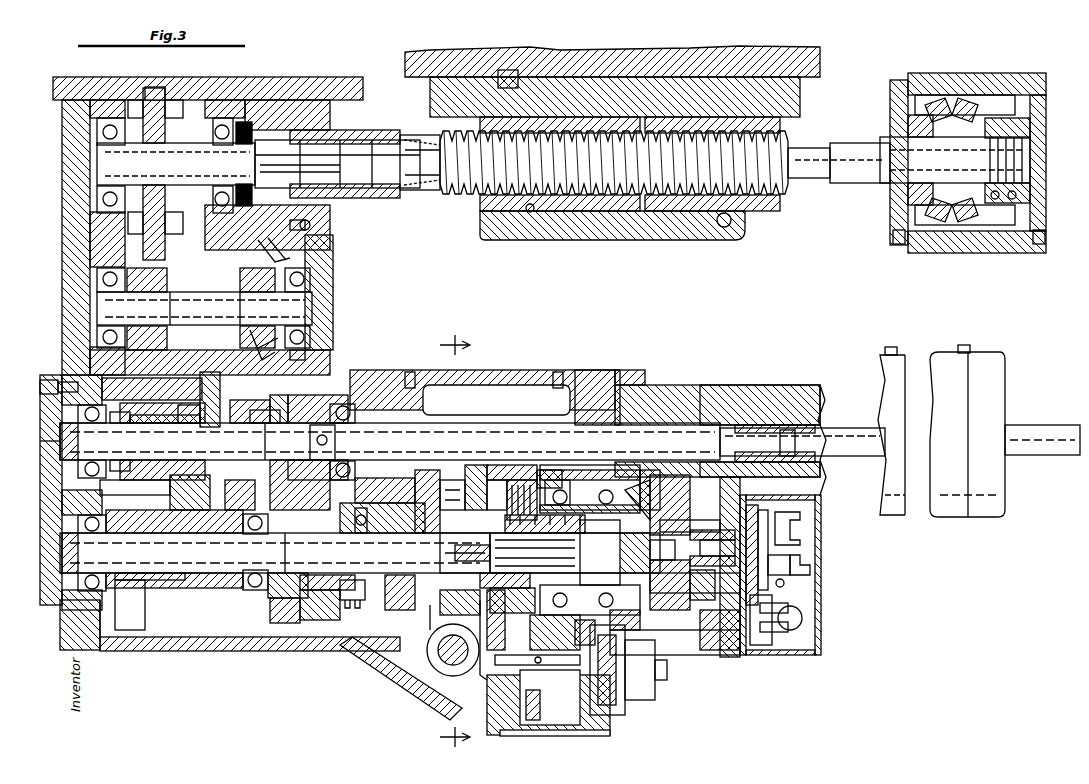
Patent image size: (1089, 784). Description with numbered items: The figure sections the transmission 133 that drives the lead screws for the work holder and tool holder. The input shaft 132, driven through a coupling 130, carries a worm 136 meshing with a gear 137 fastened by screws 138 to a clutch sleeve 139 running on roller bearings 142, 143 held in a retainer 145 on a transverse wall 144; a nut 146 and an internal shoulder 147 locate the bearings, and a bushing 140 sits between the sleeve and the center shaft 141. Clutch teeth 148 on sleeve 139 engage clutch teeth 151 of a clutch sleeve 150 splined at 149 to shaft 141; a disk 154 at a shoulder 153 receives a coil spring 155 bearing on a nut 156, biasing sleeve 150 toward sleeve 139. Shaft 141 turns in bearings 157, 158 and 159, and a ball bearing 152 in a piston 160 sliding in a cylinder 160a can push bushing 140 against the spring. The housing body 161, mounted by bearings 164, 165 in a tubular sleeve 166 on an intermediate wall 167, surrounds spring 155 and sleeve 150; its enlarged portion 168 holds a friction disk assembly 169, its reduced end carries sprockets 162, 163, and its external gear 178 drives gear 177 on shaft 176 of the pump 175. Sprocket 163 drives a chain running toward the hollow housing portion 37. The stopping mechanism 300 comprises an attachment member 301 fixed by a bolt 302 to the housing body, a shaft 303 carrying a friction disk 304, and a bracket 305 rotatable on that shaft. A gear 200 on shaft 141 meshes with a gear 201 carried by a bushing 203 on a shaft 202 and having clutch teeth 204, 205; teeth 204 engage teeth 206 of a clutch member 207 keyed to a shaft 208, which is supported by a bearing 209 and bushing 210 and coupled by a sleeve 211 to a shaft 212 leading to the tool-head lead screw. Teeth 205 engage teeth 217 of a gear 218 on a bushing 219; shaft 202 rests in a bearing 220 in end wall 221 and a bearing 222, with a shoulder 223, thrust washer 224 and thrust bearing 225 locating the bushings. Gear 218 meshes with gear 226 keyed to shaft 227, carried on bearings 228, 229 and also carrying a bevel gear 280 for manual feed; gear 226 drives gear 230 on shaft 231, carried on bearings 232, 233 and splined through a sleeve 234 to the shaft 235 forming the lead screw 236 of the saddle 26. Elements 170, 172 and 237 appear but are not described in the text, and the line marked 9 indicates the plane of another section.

The saddle 26 is at (668, 48).
The hollow housing portion 37 is at (672, 500).
The coupling 130 is at (535, 553).
The input shaft 132 is at (440, 660).
The transmission 133 is at (195, 660).
The worm 136 is at (440, 655).
The gear 137 is at (460, 615).
The screws 138 is at (474, 465).
The clutch sleeve member 139 is at (438, 632).
The bushing 140 is at (420, 556).
The center shaft 141 is at (283, 612).
The roller bearing assembly 142 is at (442, 486).
The roller bearing assembly 143 is at (390, 490).
The transverse wall 144 is at (387, 601).
The retainer 145 is at (420, 470).
The nut 146 is at (352, 605).
The internal shoulder 147 is at (454, 553).
The clutch teeth 148 is at (492, 485).
The external spline 149 is at (470, 552).
The clutch sleeve member 150 is at (507, 585).
The clutch teeth 151 is at (520, 655).
The ball bearing assembly 152 is at (364, 511).
The external shoulder 153 is at (545, 523).
The annular disk 154 is at (559, 482).
The compression coil spring 155 is at (583, 498).
The nut 156 is at (628, 625).
The ball bearing assembly 157 is at (668, 490).
The ball bearing assembly 158 is at (70, 570).
The ball bearing assembly 159 is at (275, 598).
The piston 160 is at (330, 625).
The cylinder 160a is at (320, 620).
The housing body 161 is at (580, 615).
The large sprocket 162 is at (670, 610).
The smaller pulley 163 is at (705, 595).
The ball bearing assembly 164 is at (615, 470).
The ball bearing assembly 165 is at (585, 465).
The tubular sleeve 166 is at (645, 470).
The intermediate transverse wall 167 is at (590, 390).
The enlarged tubular portion 168 is at (555, 632).
The friction disk clutch assembly 169 is at (515, 465).
The shaft 170 is at (520, 665).
The gear 172 is at (512, 459).
The rotary pump 175 is at (640, 680).
The pump shaft 176 is at (595, 715).
The gear 177 is at (535, 700).
The external gear 178 is at (548, 470).
The gear 200 is at (162, 601).
The gear 201 is at (212, 500).
The shaft 202 is at (60, 448).
The bearing bushing 203 is at (248, 400).
The clutch teeth 204 is at (270, 400).
The clutch teeth 205 is at (200, 395).
The clutch teeth 206 is at (280, 395).
The clutch member 207 is at (338, 395).
The shaft 208 is at (372, 430).
The ball bearing assembly 209 is at (350, 388).
The bearing bushing 210 is at (600, 370).
The sleeve member 211 is at (790, 385).
The shaft 212 is at (815, 425).
The clutch teeth 217 is at (186, 408).
The gear 218 is at (124, 412).
The bearing bushing 219 is at (140, 415).
The ball bearing assembly 220 is at (78, 472).
The end wall 221 is at (60, 430).
The ball bearing assembly 222 is at (330, 370).
The transverse shoulder 223 is at (262, 440).
The end thrust washer 224 is at (120, 405).
The end thrust bearing 225 is at (62, 375).
The gear 226 is at (165, 337).
The shaft 227 is at (198, 295).
The ball bearing assembly 228 is at (333, 265).
The ball bearing assembly 229 is at (97, 272).
The gear 230 is at (160, 218).
The shaft 231 is at (135, 162).
The ball bearing assembly 232 is at (217, 118).
The ball bearing assembly 233 is at (97, 128).
The sleeve 234 is at (340, 140).
The shaft 235 is at (425, 190).
The lead screw 236 is at (810, 125).
The spacer 237 is at (245, 478).
The bevel gear 280 is at (258, 338).
The stopping mechanism 300 is at (838, 600).
The attachment member 301 is at (795, 580).
The threaded bolt 302 is at (690, 530).
The shaft 303 is at (760, 520).
The flat friction disk 304 is at (802, 543).
The bracket member 305 is at (812, 565).
The section line 9 is at (445, 541).